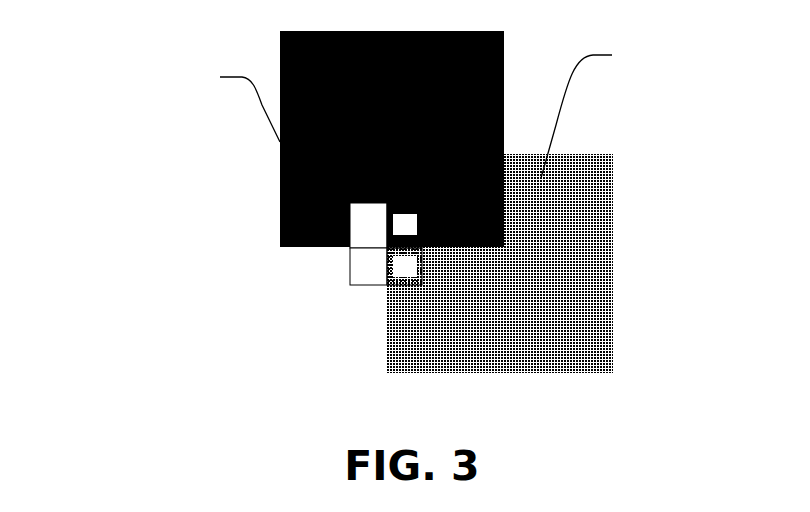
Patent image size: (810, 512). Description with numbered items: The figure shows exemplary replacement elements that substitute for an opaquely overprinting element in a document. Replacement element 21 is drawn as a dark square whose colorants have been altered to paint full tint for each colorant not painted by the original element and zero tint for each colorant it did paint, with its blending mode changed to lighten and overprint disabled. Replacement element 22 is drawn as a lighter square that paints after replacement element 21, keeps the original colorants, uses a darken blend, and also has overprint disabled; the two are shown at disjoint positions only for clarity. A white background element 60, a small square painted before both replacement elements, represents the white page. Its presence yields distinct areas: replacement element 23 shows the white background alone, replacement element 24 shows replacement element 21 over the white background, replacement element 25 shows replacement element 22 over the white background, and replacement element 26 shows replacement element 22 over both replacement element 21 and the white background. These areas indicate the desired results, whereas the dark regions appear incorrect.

The replacement element 21 is at (285, 139).
The replacement element 22 is at (554, 211).
The replacement element 23 is at (368, 266).
The replacement element 24 is at (368, 225).
The replacement element 25 is at (404, 266).
The replacement element 26 is at (404, 225).
The white background element 60 is at (353, 266).